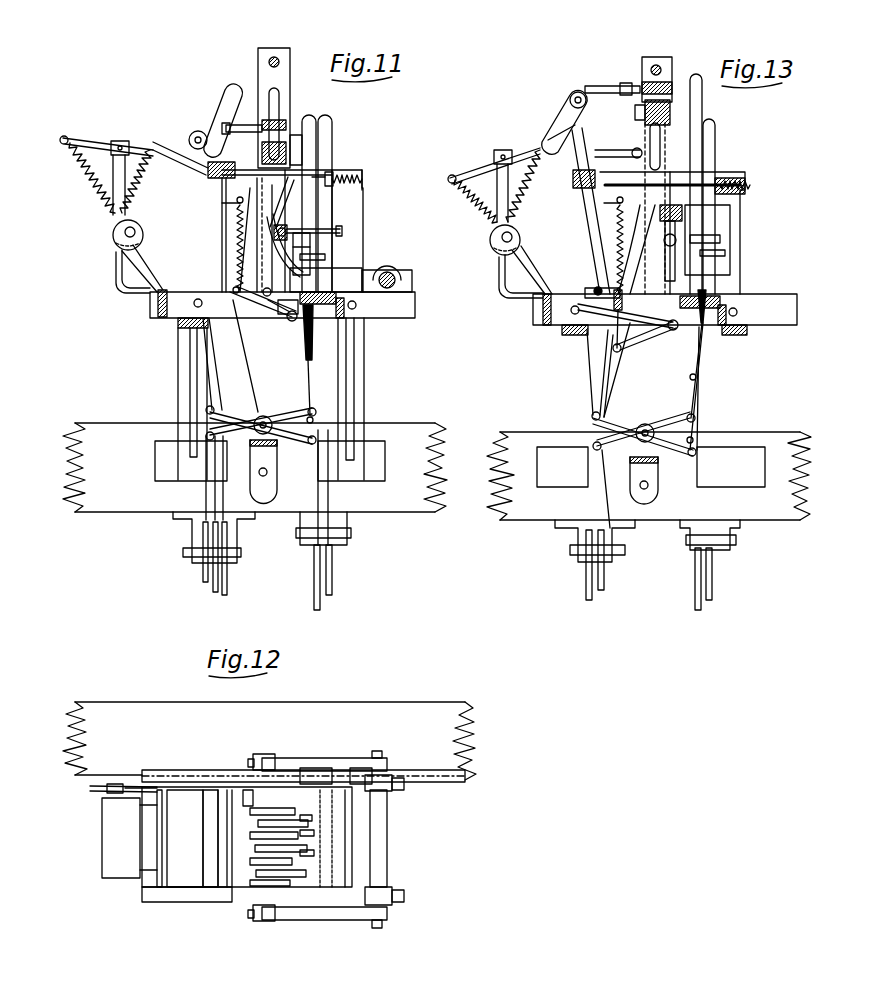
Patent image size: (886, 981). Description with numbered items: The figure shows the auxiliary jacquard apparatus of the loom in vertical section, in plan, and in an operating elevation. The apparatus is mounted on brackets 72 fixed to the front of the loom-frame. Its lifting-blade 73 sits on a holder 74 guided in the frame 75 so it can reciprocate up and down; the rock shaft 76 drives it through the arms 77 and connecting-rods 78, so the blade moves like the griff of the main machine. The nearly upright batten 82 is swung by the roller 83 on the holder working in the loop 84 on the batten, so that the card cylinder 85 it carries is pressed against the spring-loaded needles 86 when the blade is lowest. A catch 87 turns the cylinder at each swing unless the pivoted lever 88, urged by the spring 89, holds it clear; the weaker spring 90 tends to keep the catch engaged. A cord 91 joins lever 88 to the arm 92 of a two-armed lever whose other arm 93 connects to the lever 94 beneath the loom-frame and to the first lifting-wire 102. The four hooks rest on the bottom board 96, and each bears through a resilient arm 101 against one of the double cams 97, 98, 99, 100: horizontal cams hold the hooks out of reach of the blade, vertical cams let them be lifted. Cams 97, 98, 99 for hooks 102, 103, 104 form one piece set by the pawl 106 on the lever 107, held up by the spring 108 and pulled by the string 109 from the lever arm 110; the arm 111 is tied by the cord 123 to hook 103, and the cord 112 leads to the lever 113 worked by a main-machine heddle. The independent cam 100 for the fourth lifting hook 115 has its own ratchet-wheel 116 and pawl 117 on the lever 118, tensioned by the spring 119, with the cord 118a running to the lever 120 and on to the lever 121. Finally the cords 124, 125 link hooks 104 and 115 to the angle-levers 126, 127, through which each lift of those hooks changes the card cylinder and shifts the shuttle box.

In FIG. 11, the brackets 72 is at (178, 366).
In FIG. 11, the lifting-blade 73 is at (312, 128).
In FIG. 13, the holder 74 is at (642, 118).
In FIG. 11, the frame 75 is at (262, 74).
In FIG. 13, the frame 75 is at (663, 130).
In FIG. 11, the shaft 76 is at (400, 278).
In FIG. 12, the shaft 76 is at (385, 852).
In FIG. 11, the arms 77 is at (330, 282).
In FIG. 12, the arms 77 is at (348, 758).
In FIG. 12, the connecting-rods 78 is at (262, 756).
In FIG. 11, the batten 82 is at (220, 222).
In FIG. 13, the batten 82 is at (592, 242).
In FIG. 11, the roller 83 is at (196, 130).
In FIG. 11, the loop 84 is at (222, 90).
In FIG. 11, the cylinder 85 is at (212, 176).
In FIG. 13, the cylinder 85 is at (578, 190).
In FIG. 12, the cylinder 85 is at (210, 880).
In FIG. 11, the needles 86 is at (275, 200).
In FIG. 13, the needles 86 is at (636, 165).
In FIG. 11, the catch 87 is at (165, 142).
In FIG. 13, the catch 87 is at (556, 140).
In FIG. 12, the catch 87 is at (190, 792).
In FIG. 11, the lever 88 is at (80, 138).
In FIG. 13, the lever 88 is at (472, 170).
In FIG. 12, the lever 88 is at (80, 792).
In FIG. 11, the spring 89 is at (88, 178).
In FIG. 13, the spring 89 is at (476, 200).
In FIG. 11, the spring 90 is at (134, 190).
In FIG. 13, the spring 90 is at (520, 198).
In FIG. 11, the cord 91 is at (143, 232).
In FIG. 13, the cord 91 is at (520, 235).
In FIG. 11, the lever arm 92 is at (218, 440).
In FIG. 13, the lever arm 92 is at (603, 408).
In FIG. 11, the lever arm 93 is at (312, 420).
In FIG. 13, the lever arm 93 is at (692, 455).
In FIG. 11, the two-armed lever 94 is at (214, 580).
In FIG. 11, the bottom board 96 is at (306, 320).
In FIG. 13, the bottom board 96 is at (698, 320).
In FIG. 12, the double cam 97 is at (265, 808).
In FIG. 12, the double cam 98 is at (250, 832).
In FIG. 11, the double cam 99 is at (300, 230).
In FIG. 13, the double cam 99 is at (700, 238).
In FIG. 12, the double cam 99 is at (255, 848).
In FIG. 11, the double cam 100 is at (312, 254).
In FIG. 12, the double cam 100 is at (258, 865).
In FIG. 11, the resilient arm 101 is at (320, 262).
In FIG. 13, the resilient arm 101 is at (680, 265).
In FIG. 12, the lifting-wire 102 is at (290, 820).
In FIG. 13, the lifting-wire 103 is at (702, 112).
In FIG. 12, the lifting-wire 103 is at (312, 818).
In FIG. 11, the lifting-wire 104 is at (302, 147).
In FIG. 12, the lifting-wire 104 is at (314, 833).
In FIG. 13, the pawl 106 is at (545, 310).
In FIG. 12, the pawl 106 is at (248, 790).
In FIG. 11, the lever 107 is at (262, 306).
In FIG. 13, the lever 107 is at (629, 352).
In FIG. 11, the spring 108 is at (230, 270).
In FIG. 13, the spring 108 is at (620, 316).
In FIG. 11, the string 109 is at (248, 362).
In FIG. 13, the string 109 is at (612, 400).
In FIG. 11, the lever arm 110 is at (206, 406).
In FIG. 13, the lever arm 110 is at (610, 445).
In FIG. 13, the lever arm 111 is at (695, 418).
In FIG. 11, the cord 112 is at (262, 497).
In FIG. 13, the cord 112 is at (630, 508).
In FIG. 11, the lever 113 is at (229, 570).
In FIG. 13, the lever 113 is at (605, 570).
In FIG. 11, the lifting hook 115 is at (332, 133).
In FIG. 12, the lifting hook 115 is at (314, 853).
In FIG. 13, the ratchet-wheel 116 is at (700, 190).
In FIG. 12, the ratchet-wheel 116 is at (280, 886).
In FIG. 11, the pawl 117 is at (160, 310).
In FIG. 13, the pawl 117 is at (712, 253).
In FIG. 12, the pawl 117 is at (262, 878).
In FIG. 11, the lever 118 is at (276, 305).
In FIG. 13, the lever 118 is at (650, 332).
In FIG. 11, the cord 118a is at (214, 380).
In FIG. 13, the cord 118a is at (590, 365).
In FIG. 13, the spring 119 is at (596, 288).
In FIG. 11, the lever 120 is at (280, 416).
In FIG. 13, the lever 120 is at (598, 430).
In FIG. 11, the lever 121 is at (203, 572).
In FIG. 13, the lever 121 is at (586, 578).
In FIG. 13, the cord 123 is at (692, 377).
In FIG. 11, the cord 124 is at (330, 497).
In FIG. 11, the cord 125 is at (318, 497).
In FIG. 11, the angle-lever 126 is at (332, 585).
In FIG. 13, the angle-lever 126 is at (712, 578).
In FIG. 11, the angle-lever 127 is at (314, 585).
In FIG. 13, the angle-lever 127 is at (695, 585).